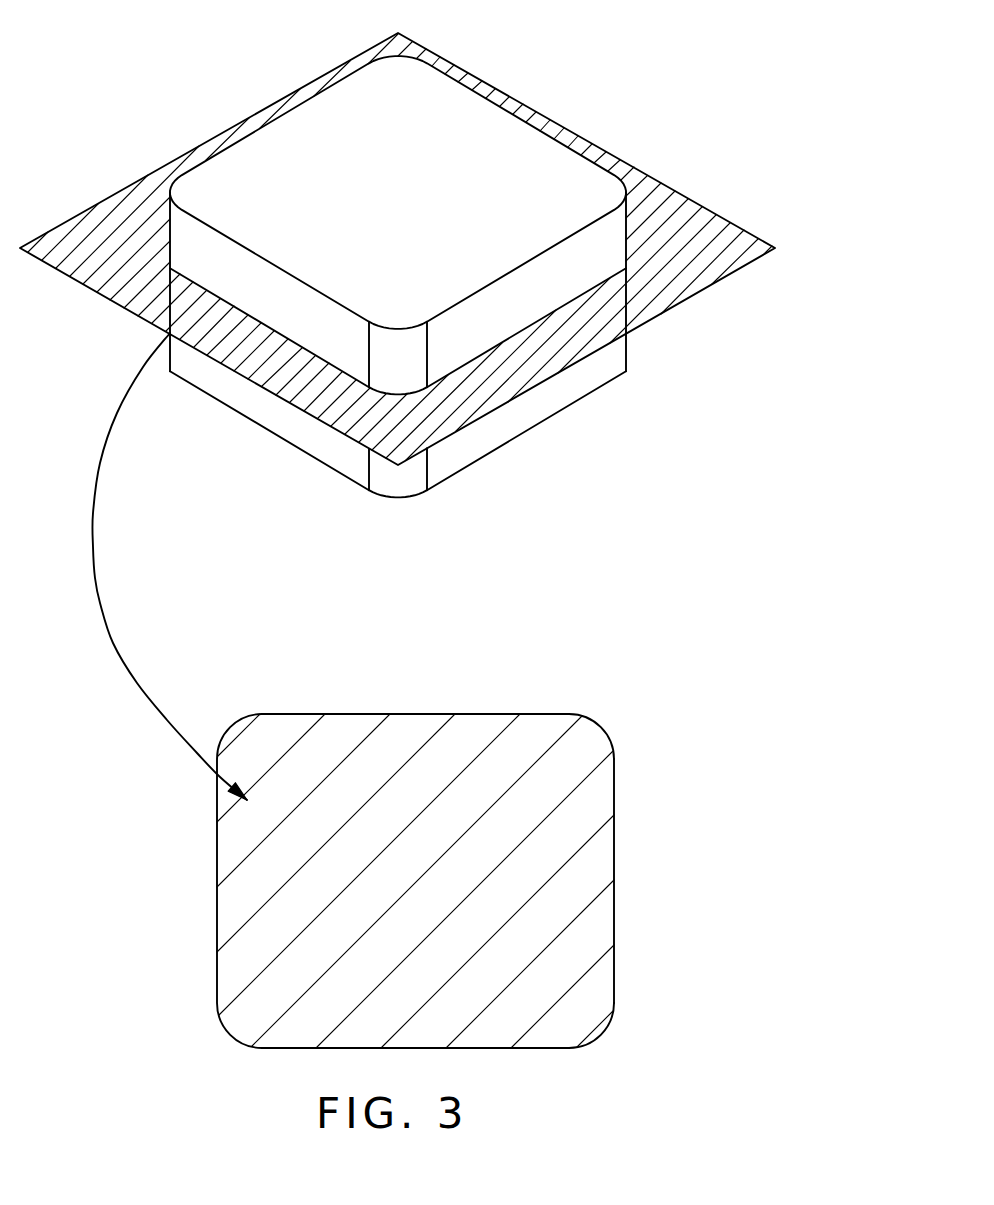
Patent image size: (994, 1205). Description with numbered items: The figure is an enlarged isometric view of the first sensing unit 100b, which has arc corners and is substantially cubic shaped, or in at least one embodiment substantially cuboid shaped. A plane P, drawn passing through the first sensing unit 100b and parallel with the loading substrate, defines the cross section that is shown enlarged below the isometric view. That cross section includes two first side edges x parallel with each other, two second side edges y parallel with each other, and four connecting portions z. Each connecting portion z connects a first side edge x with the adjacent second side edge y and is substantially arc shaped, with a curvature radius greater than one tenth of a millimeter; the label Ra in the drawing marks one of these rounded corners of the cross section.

The first sensing unit 100b is at (505, 147).
The plane P is at (668, 288).
The second side edge y is at (412, 714).
The connecting portion z is at (600, 728).
The first side edge x is at (614, 885).
The corner radius Ra is at (603, 1028).